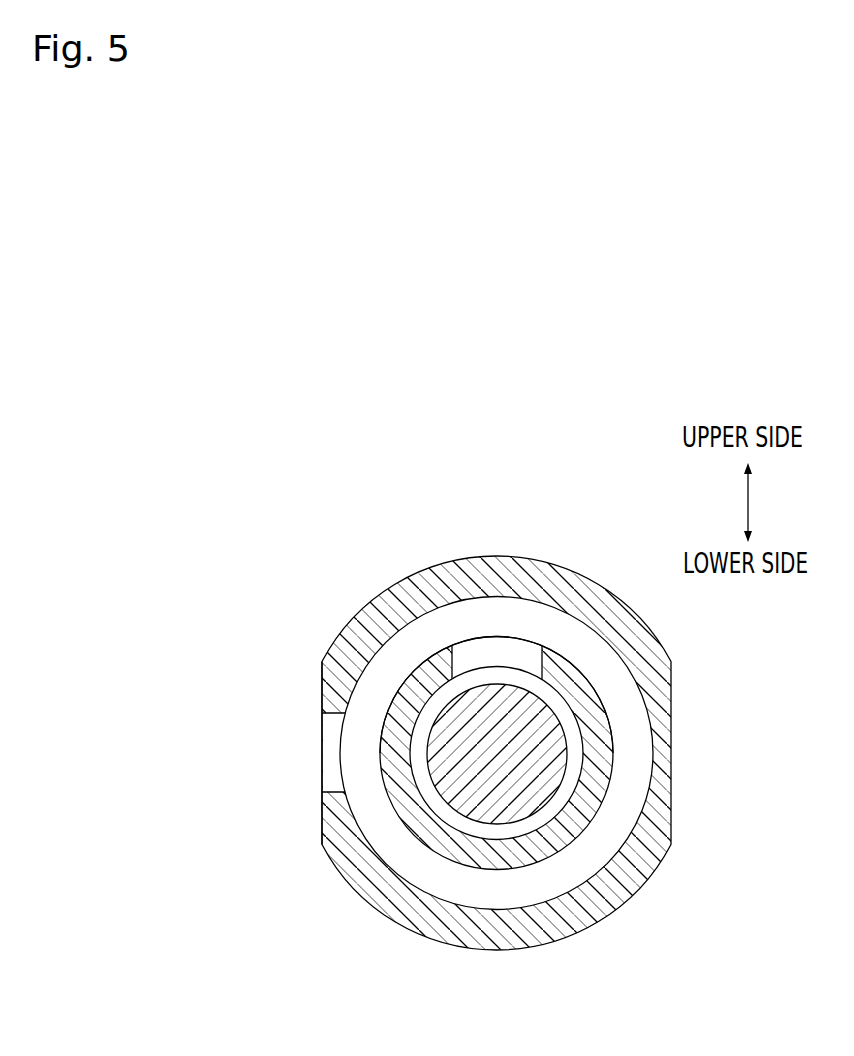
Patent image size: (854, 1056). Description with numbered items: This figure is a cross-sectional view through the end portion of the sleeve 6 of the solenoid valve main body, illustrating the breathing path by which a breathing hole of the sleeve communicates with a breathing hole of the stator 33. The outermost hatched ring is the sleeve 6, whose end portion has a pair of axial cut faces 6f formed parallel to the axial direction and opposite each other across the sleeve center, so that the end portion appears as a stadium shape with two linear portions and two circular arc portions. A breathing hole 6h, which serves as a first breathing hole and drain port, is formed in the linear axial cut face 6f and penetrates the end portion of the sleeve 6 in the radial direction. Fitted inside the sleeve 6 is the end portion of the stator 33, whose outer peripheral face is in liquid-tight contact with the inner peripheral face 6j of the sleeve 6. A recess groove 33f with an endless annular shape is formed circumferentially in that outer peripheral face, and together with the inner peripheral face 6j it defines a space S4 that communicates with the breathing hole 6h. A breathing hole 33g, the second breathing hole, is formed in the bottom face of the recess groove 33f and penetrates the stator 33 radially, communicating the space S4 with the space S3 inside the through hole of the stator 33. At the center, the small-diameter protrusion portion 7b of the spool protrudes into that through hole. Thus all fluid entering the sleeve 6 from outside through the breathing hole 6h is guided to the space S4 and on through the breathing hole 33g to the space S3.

The sleeve 6 is at (600, 612).
The axial cut face 6f is at (322, 692).
The breathing hole 6h is at (322, 778).
The inner peripheral face 6j is at (437, 607).
The stator 33 is at (600, 783).
The recess groove 33f is at (400, 652).
The breathing hole 33g is at (542, 660).
The protrusion portion 7b is at (497, 795).
The space S3 is at (580, 748).
The space S4 is at (622, 686).